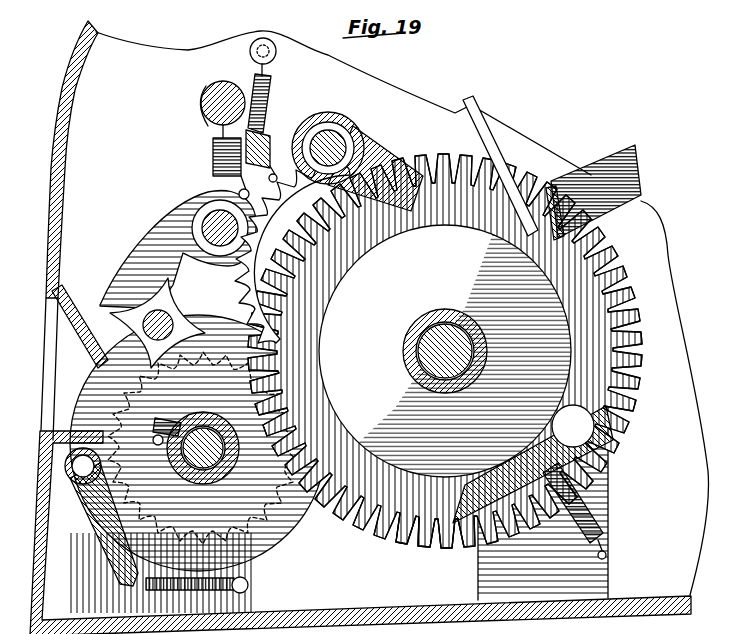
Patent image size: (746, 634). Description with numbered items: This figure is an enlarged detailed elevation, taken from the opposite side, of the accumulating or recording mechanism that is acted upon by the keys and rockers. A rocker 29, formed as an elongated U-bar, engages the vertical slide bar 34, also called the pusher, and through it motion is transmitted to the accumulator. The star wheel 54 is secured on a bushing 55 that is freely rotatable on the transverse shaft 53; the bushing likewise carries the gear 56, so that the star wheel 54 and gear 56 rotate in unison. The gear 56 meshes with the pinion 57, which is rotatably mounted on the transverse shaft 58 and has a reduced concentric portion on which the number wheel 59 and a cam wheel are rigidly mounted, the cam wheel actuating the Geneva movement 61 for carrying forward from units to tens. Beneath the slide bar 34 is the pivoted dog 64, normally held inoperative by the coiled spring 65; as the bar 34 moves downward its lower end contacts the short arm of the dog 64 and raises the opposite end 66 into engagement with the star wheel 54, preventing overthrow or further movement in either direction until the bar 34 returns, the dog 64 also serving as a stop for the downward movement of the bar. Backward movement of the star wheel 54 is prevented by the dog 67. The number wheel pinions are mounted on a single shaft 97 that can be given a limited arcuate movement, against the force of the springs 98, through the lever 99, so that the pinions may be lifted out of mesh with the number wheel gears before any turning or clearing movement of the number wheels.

The rocker 29 is at (618, 148).
The slide bar 34 is at (480, 128).
The transverse shaft 53 is at (405, 355).
The star wheel 54 is at (445, 351).
The bushing 55 is at (203, 448).
The gear 56 is at (430, 378).
The pinion 57 is at (212, 328).
The transverse shaft 58 is at (198, 443).
The number wheel 59 is at (201, 463).
The Geneva movement 61 is at (102, 305).
The pivoted dog 64 is at (612, 400).
The coiled spring 65 is at (595, 502).
The opposite end of dog 66 is at (425, 532).
The dog 67 is at (386, 150).
The shaft 97 is at (172, 292).
The spring 98 is at (205, 148).
The lever 99 is at (150, 225).